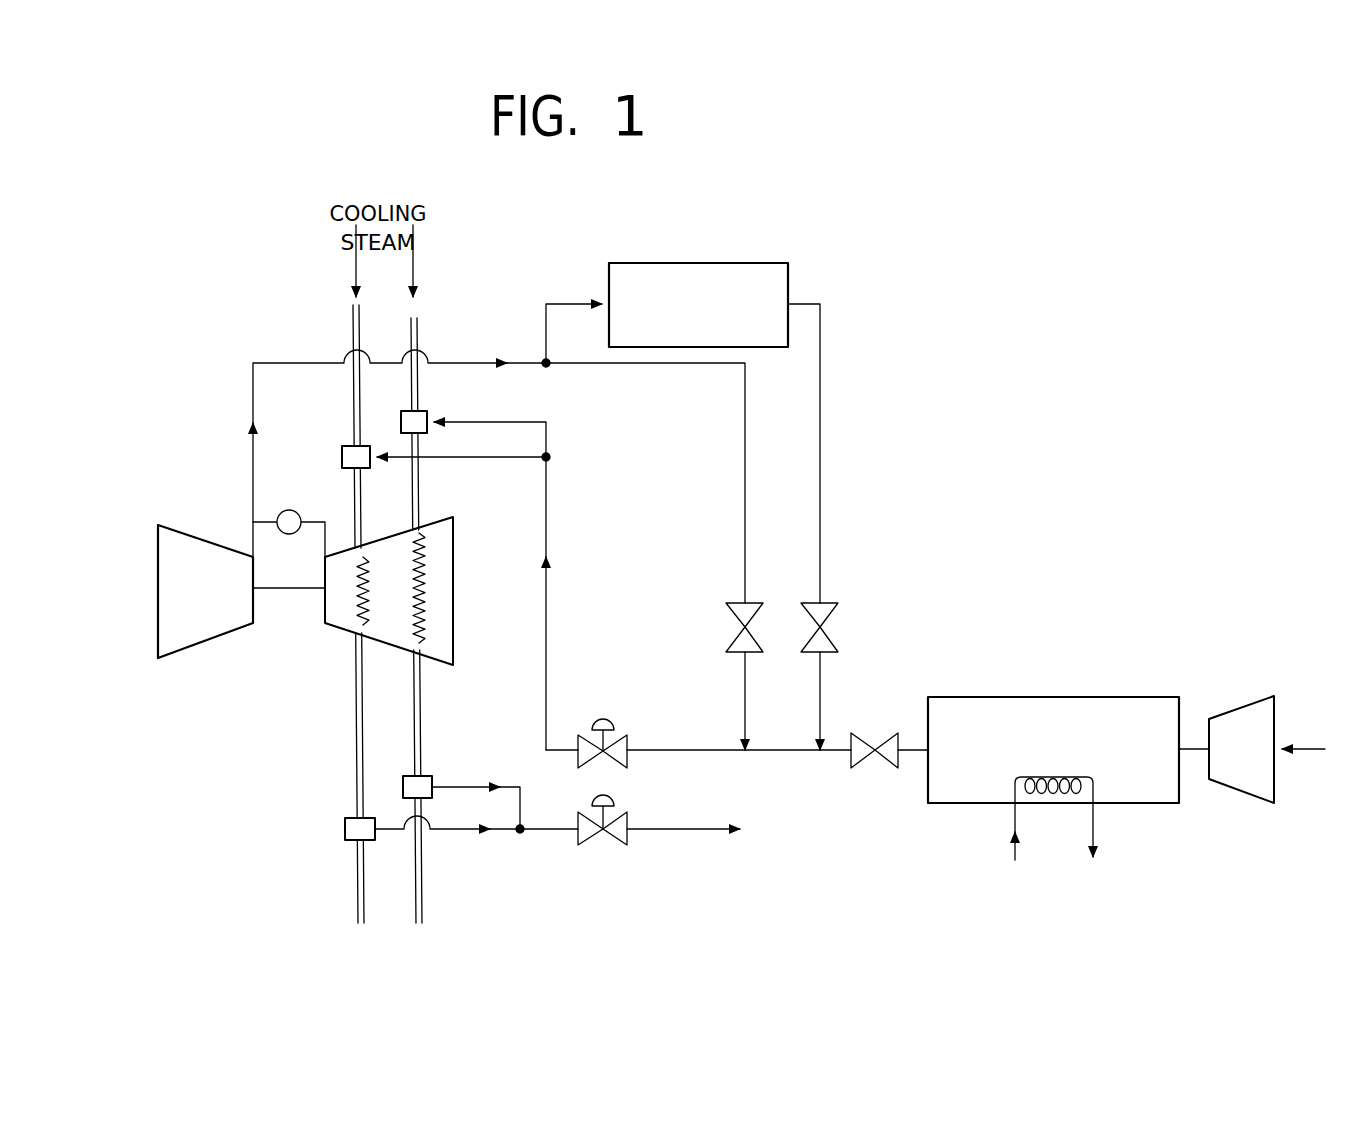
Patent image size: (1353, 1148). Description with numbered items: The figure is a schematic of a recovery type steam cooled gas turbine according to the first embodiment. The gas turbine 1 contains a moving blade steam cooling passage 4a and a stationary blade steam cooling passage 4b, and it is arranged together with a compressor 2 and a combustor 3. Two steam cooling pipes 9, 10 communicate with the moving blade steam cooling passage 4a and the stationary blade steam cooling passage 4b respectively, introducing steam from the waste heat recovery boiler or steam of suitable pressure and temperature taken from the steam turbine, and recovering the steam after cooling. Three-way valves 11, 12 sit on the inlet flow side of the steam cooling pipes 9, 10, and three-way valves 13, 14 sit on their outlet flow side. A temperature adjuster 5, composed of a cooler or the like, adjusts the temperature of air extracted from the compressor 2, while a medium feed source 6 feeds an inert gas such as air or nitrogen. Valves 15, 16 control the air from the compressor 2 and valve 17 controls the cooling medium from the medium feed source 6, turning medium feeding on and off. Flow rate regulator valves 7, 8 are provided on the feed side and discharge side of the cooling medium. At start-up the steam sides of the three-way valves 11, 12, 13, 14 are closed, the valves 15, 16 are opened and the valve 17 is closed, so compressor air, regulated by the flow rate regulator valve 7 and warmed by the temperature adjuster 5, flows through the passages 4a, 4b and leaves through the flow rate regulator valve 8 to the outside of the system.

The gas turbine 1 is at (325, 623).
The compressor 2 is at (195, 533).
The combustor 3 is at (287, 510).
The moving blade steam cooling passage 4a is at (357, 613).
The stationary blade steam cooling passage 4b is at (417, 620).
The temperature adjuster 5 is at (773, 263).
The medium feed source 6 is at (1060, 697).
The flow rate regulator valve 7 is at (608, 720).
The flow rate regulator valve 8 is at (625, 845).
The steam cooling pipe 9 is at (352, 327).
The steam cooling pipe 10 is at (418, 335).
The three-way valve 11 is at (345, 446).
The three-way valve 12 is at (427, 411).
The three-way valve 13 is at (345, 840).
The three-way valve 14 is at (432, 776).
The valve 15 is at (726, 603).
The valve 16 is at (838, 603).
The valve 17 is at (878, 733).